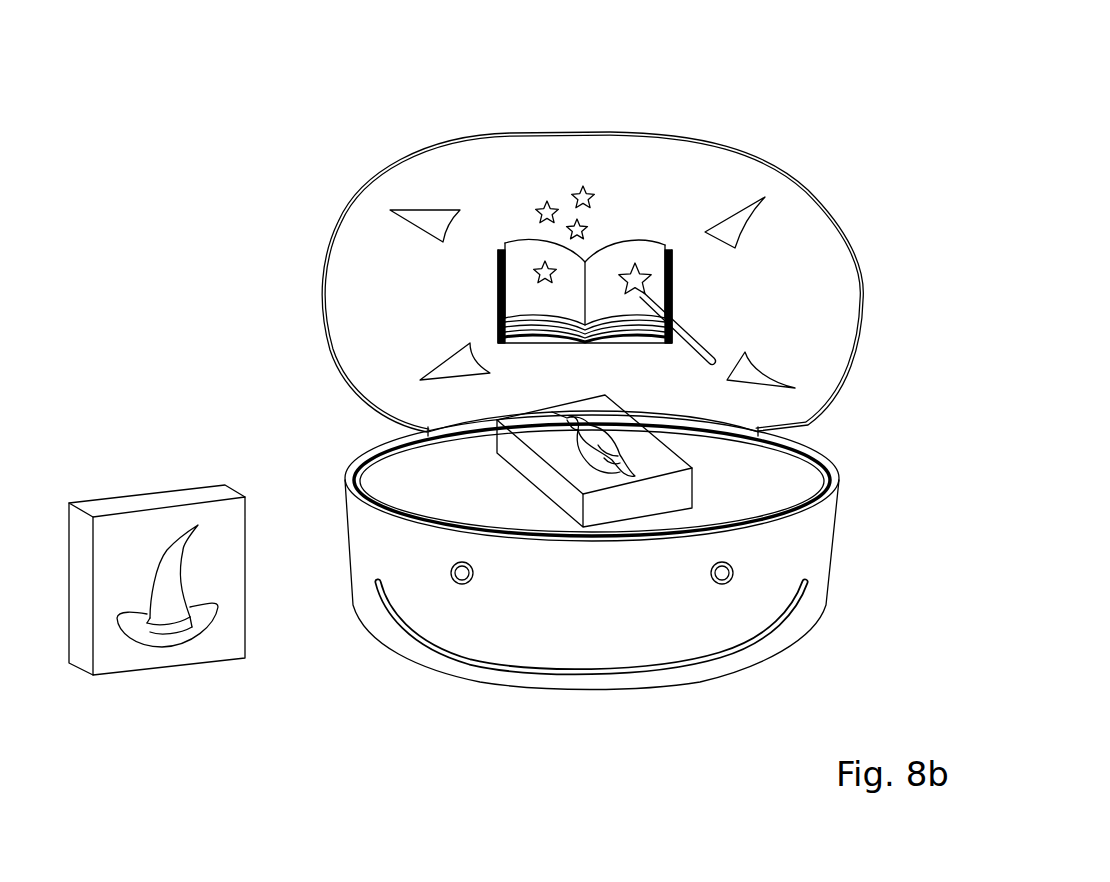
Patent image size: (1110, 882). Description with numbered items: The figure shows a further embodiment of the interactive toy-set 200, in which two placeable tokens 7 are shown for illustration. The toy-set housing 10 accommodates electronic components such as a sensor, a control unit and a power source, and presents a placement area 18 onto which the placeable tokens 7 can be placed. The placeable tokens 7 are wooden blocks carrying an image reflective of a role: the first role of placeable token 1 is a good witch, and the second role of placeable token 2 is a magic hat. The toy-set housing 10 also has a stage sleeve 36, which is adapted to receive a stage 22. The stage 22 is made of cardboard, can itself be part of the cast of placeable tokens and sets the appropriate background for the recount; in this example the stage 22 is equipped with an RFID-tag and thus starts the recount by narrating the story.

The interactive toy-set 200 is at (325, 143).
The stage 22 is at (792, 287).
The stage sleeve 36 is at (473, 427).
The placement area 18 is at (785, 482).
The toy-set housing 10 is at (785, 548).
The placeable tokens 7 is at (540, 478).
The first role placeable token 1 is at (640, 448).
The second role placeable token 2 is at (150, 550).